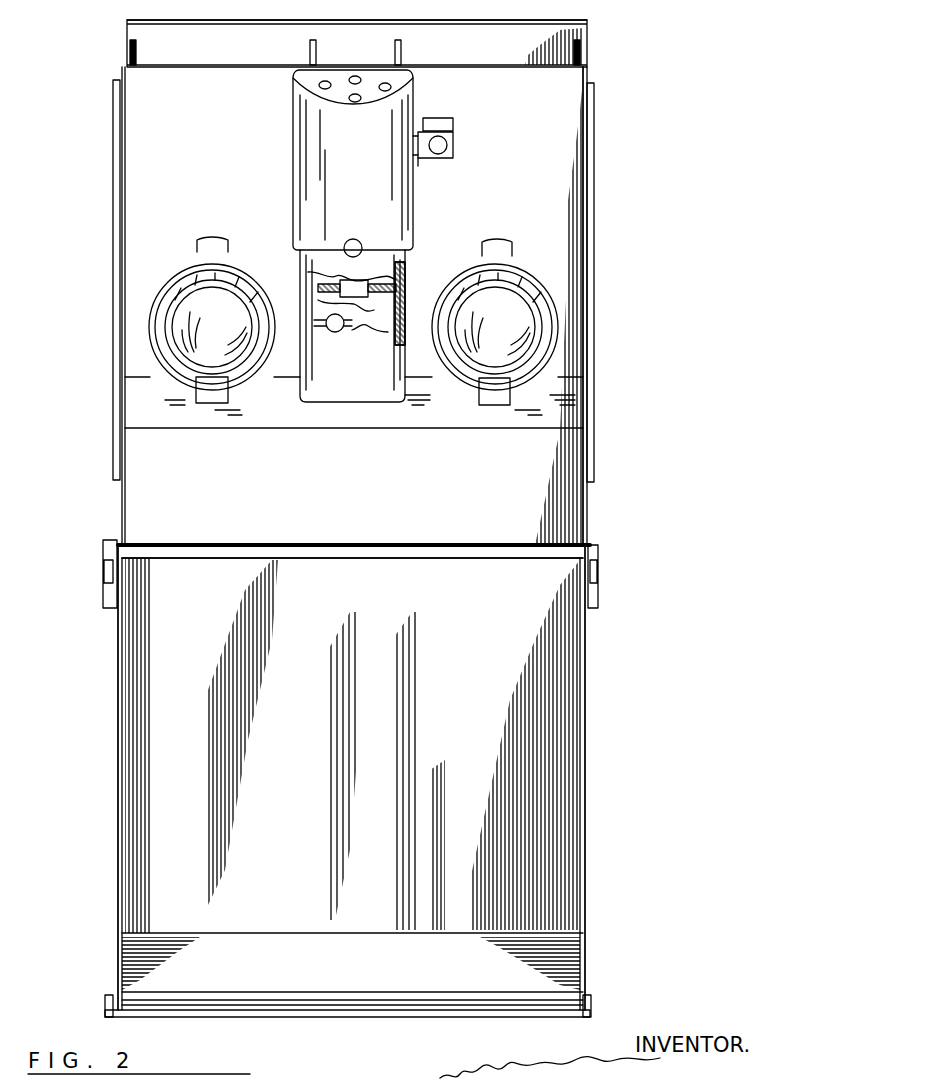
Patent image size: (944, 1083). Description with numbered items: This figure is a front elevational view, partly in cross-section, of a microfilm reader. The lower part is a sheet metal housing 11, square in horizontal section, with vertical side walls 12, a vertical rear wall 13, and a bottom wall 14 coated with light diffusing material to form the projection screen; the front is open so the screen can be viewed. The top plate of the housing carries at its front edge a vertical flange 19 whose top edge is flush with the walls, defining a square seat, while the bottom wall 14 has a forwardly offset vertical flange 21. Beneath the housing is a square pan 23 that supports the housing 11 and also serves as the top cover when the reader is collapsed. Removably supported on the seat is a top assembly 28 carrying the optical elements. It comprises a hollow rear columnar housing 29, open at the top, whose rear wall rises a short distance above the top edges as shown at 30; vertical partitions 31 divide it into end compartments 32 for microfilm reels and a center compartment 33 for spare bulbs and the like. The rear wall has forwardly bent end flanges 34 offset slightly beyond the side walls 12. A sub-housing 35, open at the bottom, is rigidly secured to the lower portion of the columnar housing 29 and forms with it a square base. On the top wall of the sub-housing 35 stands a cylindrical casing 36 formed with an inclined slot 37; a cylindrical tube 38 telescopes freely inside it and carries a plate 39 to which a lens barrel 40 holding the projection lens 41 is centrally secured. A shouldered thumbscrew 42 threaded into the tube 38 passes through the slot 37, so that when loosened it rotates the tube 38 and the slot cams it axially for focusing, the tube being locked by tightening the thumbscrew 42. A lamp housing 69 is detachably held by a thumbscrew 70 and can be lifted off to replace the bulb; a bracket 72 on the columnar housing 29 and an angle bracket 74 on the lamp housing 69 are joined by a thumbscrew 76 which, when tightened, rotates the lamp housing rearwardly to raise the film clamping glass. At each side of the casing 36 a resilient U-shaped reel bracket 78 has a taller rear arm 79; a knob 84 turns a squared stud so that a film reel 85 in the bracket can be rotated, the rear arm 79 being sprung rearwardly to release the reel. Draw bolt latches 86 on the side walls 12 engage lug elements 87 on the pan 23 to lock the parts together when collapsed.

The housing 11 is at (597, 852).
The side walls 12 is at (110, 710).
The rear wall 13 is at (140, 772).
The bottom wall 14 is at (170, 968).
The vertical flange 19 is at (376, 554).
The vertical flange 21 is at (442, 1000).
The square pan 23 is at (414, 1022).
The top assembly 28 is at (610, 236).
The rear columnar housing 29 is at (570, 127).
The top end of rear wall 30 is at (588, 35).
The vertical partitions 31 is at (393, 47).
The end compartments 32 is at (153, 48).
The center compartment 33 is at (373, 26).
The vertical end flanges 34 is at (119, 228).
The sub-housing 35 is at (580, 430).
The cylindrical casing 36 is at (300, 328).
The inclined slot 37 is at (350, 334).
The cylindrical tube 38 is at (404, 298).
The plate 39 is at (402, 272).
The lens barrel 40 is at (340, 288).
The projection lens 41 is at (344, 284).
The shouldered thumbscrew 42 is at (334, 330).
The lamp housing 69 is at (398, 208).
The thumbscrew 70 is at (356, 244).
The bracket 72 is at (440, 120).
The angle bracket 74 is at (425, 160).
The thumbscrew 76 is at (445, 148).
The reel bracket 78 is at (228, 394).
The rear arm 79 is at (218, 244).
The knob 84 is at (195, 352).
The film reel 85 is at (173, 266).
The latches 86 is at (94, 592).
The lug elements 87 is at (100, 1004).